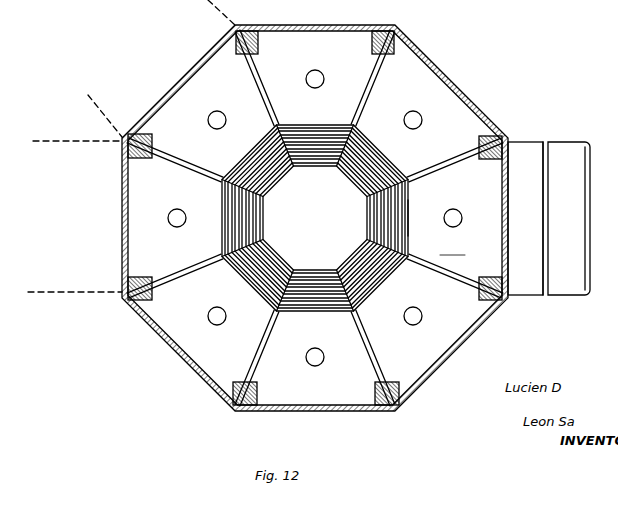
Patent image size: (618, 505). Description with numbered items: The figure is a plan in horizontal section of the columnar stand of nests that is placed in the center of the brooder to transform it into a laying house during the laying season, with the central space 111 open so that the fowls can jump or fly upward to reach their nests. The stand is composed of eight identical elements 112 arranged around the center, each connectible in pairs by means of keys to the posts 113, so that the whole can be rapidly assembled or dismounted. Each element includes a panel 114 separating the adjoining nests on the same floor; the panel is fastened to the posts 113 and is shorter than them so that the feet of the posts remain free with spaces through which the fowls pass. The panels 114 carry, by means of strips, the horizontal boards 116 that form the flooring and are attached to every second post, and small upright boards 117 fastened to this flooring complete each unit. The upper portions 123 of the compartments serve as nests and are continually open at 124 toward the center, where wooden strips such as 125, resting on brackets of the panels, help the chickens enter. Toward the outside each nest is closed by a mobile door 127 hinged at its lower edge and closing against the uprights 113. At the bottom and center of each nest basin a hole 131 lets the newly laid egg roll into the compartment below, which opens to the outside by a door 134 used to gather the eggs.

The compartment 111 is at (175, 206).
The element 112 is at (315, 218).
The post 113 is at (250, 47).
The panel 114 is at (186, 161).
The horizontal board 116 is at (315, 218).
The small upright board 117 is at (232, 215).
The upper portion of compartment 123 is at (451, 246).
The opening 124 is at (404, 217).
The wooden strip 125 is at (380, 164).
The door 127 is at (515, 190).
The hole 131 is at (454, 216).
The door 134 is at (530, 218).